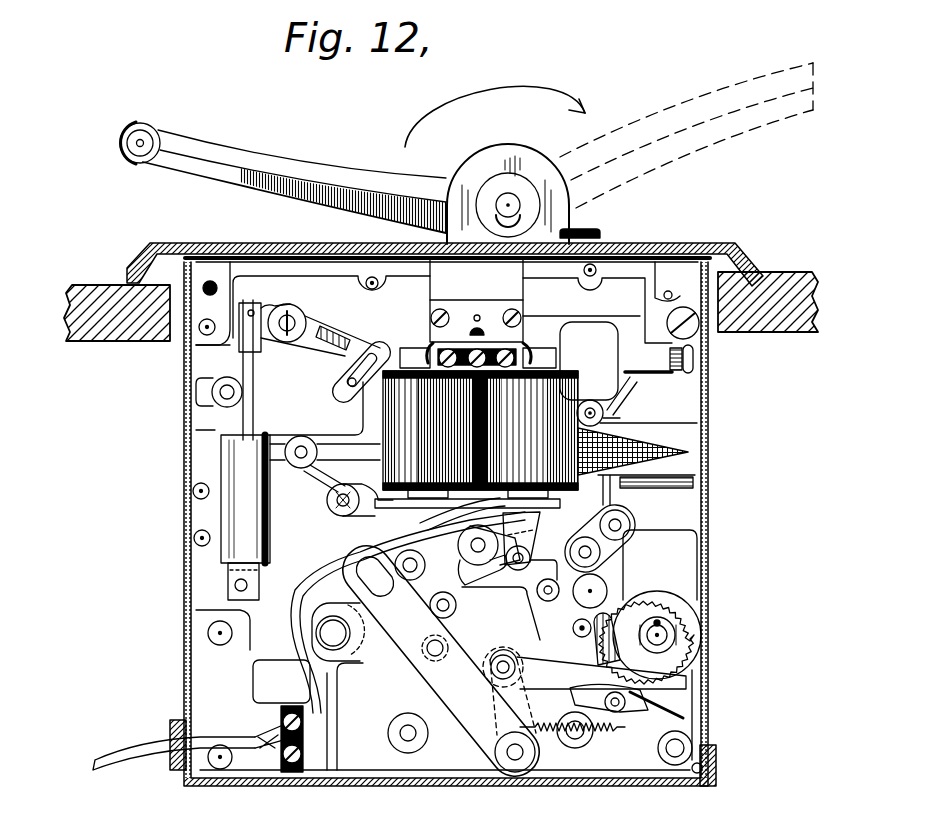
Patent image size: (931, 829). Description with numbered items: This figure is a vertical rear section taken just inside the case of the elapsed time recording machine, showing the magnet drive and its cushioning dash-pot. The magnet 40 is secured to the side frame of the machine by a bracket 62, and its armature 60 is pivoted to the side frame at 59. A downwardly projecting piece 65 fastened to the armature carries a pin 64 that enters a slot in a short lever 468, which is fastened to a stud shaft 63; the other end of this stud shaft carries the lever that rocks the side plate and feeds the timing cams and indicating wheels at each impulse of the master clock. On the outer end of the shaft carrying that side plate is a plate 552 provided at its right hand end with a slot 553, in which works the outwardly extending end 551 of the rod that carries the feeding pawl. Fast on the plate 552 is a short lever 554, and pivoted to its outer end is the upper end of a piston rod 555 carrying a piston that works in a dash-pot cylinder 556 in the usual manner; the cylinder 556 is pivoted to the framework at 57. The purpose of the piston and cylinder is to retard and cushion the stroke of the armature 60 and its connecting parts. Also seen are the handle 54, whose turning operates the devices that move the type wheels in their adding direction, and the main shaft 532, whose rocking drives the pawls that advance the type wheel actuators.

The handle 54 is at (217, 153).
The bracket 62 is at (512, 306).
The magnet 40 is at (394, 405).
The armature 60 is at (557, 508).
The downwardly projecting piece 65 is at (503, 550).
The stud shaft 63 is at (477, 553).
The short lever 468 is at (494, 562).
The pin 64 is at (518, 570).
The short lever 554 is at (268, 306).
The slot 553 is at (378, 352).
The plate 552 is at (328, 345).
The outwardly extending end 551 is at (350, 384).
The piston rod 555 is at (254, 395).
The dash-pot cylinder 556 is at (270, 510).
The armature pivot 59 is at (338, 508).
The cylinder pivot 57 is at (249, 582).
The main shaft 532 is at (351, 640).